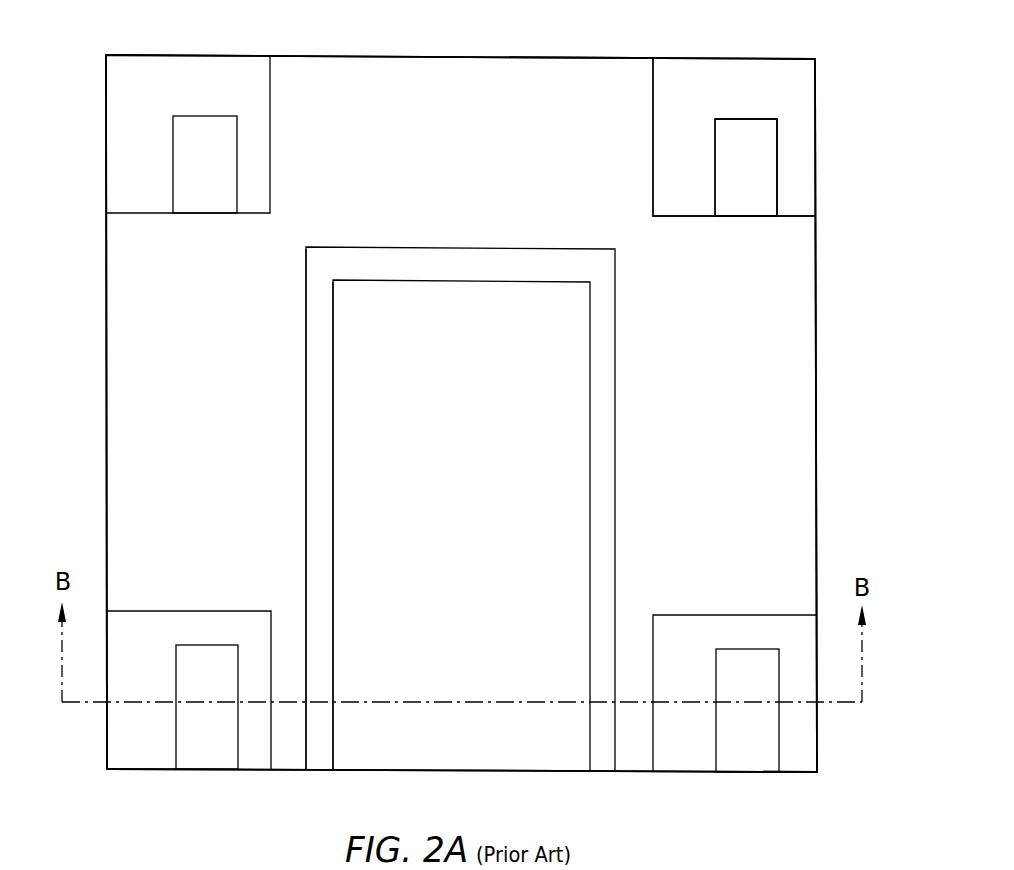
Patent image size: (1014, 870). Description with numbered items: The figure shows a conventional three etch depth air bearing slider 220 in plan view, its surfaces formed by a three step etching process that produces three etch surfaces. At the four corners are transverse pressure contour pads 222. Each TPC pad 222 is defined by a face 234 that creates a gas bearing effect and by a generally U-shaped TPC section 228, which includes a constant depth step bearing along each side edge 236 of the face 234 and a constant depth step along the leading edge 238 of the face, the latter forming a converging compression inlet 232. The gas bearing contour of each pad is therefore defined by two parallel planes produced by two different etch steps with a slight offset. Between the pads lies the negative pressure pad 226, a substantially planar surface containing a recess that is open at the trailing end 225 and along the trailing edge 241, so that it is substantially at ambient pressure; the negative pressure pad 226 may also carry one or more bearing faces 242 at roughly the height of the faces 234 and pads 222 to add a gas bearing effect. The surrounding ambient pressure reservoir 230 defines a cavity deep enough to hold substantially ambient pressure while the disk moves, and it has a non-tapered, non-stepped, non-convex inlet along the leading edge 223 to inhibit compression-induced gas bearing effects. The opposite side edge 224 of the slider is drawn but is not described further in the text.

The semiconductor die 220 is at (49, 314).
The transverse pressure contour (TPC) pads 222 is at (106, 96).
The leading edge 223 is at (593, 57).
The right side edge 224 is at (817, 326).
The trailing end 225 is at (540, 775).
The negative pressure pad 226 is at (615, 237).
The U-shaped TPC section 228 is at (808, 147).
The ambient pressure reservoir 230 is at (112, 382).
The converging compression inlet 232 is at (727, 96).
The face 234 is at (762, 212).
The side edge 236 is at (777, 190).
The leading edge 238 is at (737, 120).
The trailing edge 241 is at (376, 770).
The bearing faces 242 is at (322, 762).